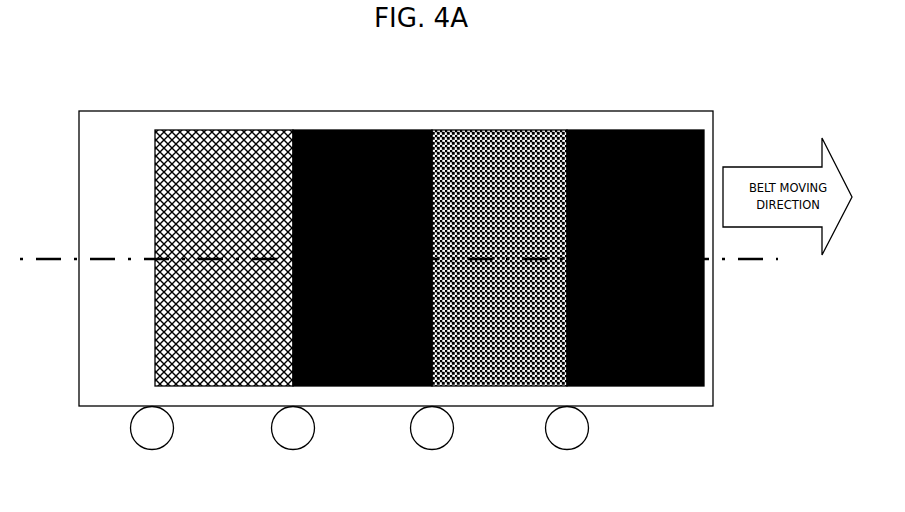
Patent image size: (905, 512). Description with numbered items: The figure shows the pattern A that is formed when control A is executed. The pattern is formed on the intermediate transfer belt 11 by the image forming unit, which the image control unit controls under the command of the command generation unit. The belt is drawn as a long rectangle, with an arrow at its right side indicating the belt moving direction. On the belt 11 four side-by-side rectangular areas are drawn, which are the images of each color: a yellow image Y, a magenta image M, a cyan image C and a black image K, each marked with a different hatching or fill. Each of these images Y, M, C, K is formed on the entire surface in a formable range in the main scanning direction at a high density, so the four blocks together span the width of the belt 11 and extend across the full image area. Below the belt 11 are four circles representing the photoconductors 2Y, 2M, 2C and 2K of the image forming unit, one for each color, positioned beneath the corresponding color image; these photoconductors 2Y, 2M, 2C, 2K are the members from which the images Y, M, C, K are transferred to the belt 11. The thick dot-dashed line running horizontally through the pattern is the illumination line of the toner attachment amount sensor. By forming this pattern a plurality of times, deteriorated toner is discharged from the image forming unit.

The intermediate transfer belt 11 is at (693, 406).
The photoconductor 2Y is at (154, 450).
The photoconductor 2M is at (295, 450).
The photoconductor 2C is at (434, 450).
The photoconductor 2K is at (569, 450).
The yellow image Y is at (214, 118).
The magenta image M is at (363, 118).
The cyan image C is at (496, 118).
The black image K is at (635, 118).